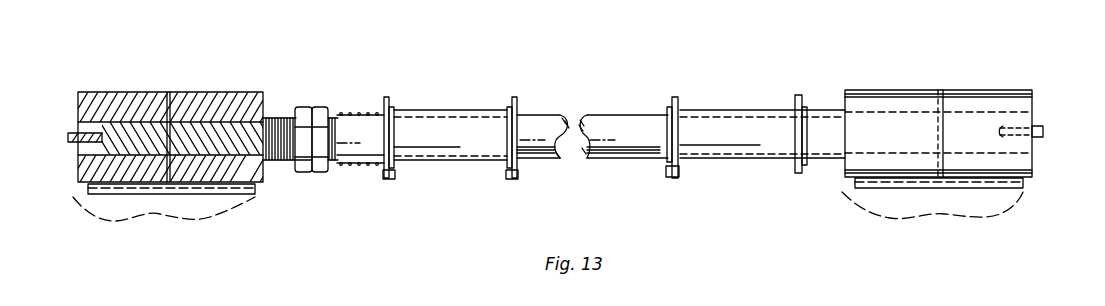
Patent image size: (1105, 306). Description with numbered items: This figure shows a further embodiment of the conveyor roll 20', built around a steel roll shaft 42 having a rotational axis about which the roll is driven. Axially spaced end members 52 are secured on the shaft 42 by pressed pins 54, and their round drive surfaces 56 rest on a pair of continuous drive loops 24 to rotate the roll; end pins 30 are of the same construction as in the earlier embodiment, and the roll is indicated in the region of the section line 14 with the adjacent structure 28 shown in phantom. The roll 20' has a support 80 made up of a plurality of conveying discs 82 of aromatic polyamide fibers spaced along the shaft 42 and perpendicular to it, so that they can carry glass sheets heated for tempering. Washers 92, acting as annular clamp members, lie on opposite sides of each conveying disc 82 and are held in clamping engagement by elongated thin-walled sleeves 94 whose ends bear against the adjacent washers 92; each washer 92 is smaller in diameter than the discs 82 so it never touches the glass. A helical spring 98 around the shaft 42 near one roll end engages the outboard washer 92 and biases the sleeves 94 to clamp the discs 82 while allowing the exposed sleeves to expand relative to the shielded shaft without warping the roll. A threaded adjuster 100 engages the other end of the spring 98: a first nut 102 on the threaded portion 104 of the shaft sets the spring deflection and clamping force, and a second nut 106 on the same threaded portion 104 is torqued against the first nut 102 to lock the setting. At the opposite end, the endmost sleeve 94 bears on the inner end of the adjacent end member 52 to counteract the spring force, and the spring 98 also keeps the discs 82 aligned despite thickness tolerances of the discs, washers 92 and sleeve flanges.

The conveyor roll 20' is at (645, 27).
The section line 14- 14 is at (640, 60).
The continuous drive loops 24 is at (130, 192).
The form panel 28 is at (170, 190).
The end pins 30 is at (72, 133).
The roll shaft 42 is at (558, 118).
The end members 52 is at (72, 95).
The pressed pins 54 is at (173, 97).
The round drive surfaces 56 is at (133, 92).
The support 80 is at (377, 98).
The conveying discs 82 is at (513, 98).
The washers 92 is at (389, 180).
The thin-walled sleeves 94 is at (455, 150).
The spring 98 is at (345, 115).
The threaded adjuster 100 is at (303, 103).
The first nut 102 is at (321, 168).
The threaded portion 104 is at (283, 158).
The second nut 106 is at (302, 168).